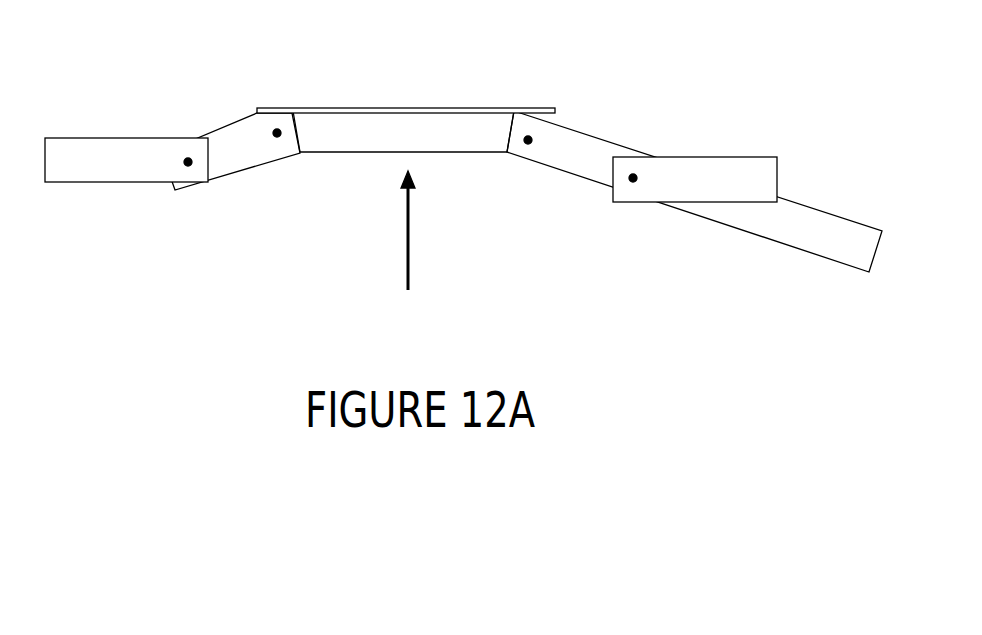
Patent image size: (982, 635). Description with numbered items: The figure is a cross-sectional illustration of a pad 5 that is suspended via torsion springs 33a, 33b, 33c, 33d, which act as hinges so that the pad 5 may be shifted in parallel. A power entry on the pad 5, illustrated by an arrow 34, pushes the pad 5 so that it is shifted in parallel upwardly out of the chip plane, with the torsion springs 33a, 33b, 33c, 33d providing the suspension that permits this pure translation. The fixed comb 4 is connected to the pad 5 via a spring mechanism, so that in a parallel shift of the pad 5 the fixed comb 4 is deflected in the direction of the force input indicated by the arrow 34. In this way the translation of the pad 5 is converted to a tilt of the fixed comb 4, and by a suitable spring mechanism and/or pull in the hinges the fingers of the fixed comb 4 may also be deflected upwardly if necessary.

The fixed comb 4 is at (825, 227).
The pad 5 is at (398, 125).
The torsion spring 33a is at (188, 160).
The torsion spring 33b is at (277, 136).
The torsion spring 33c is at (528, 137).
The torsion spring 33d is at (633, 182).
The arrow 34 is at (410, 265).